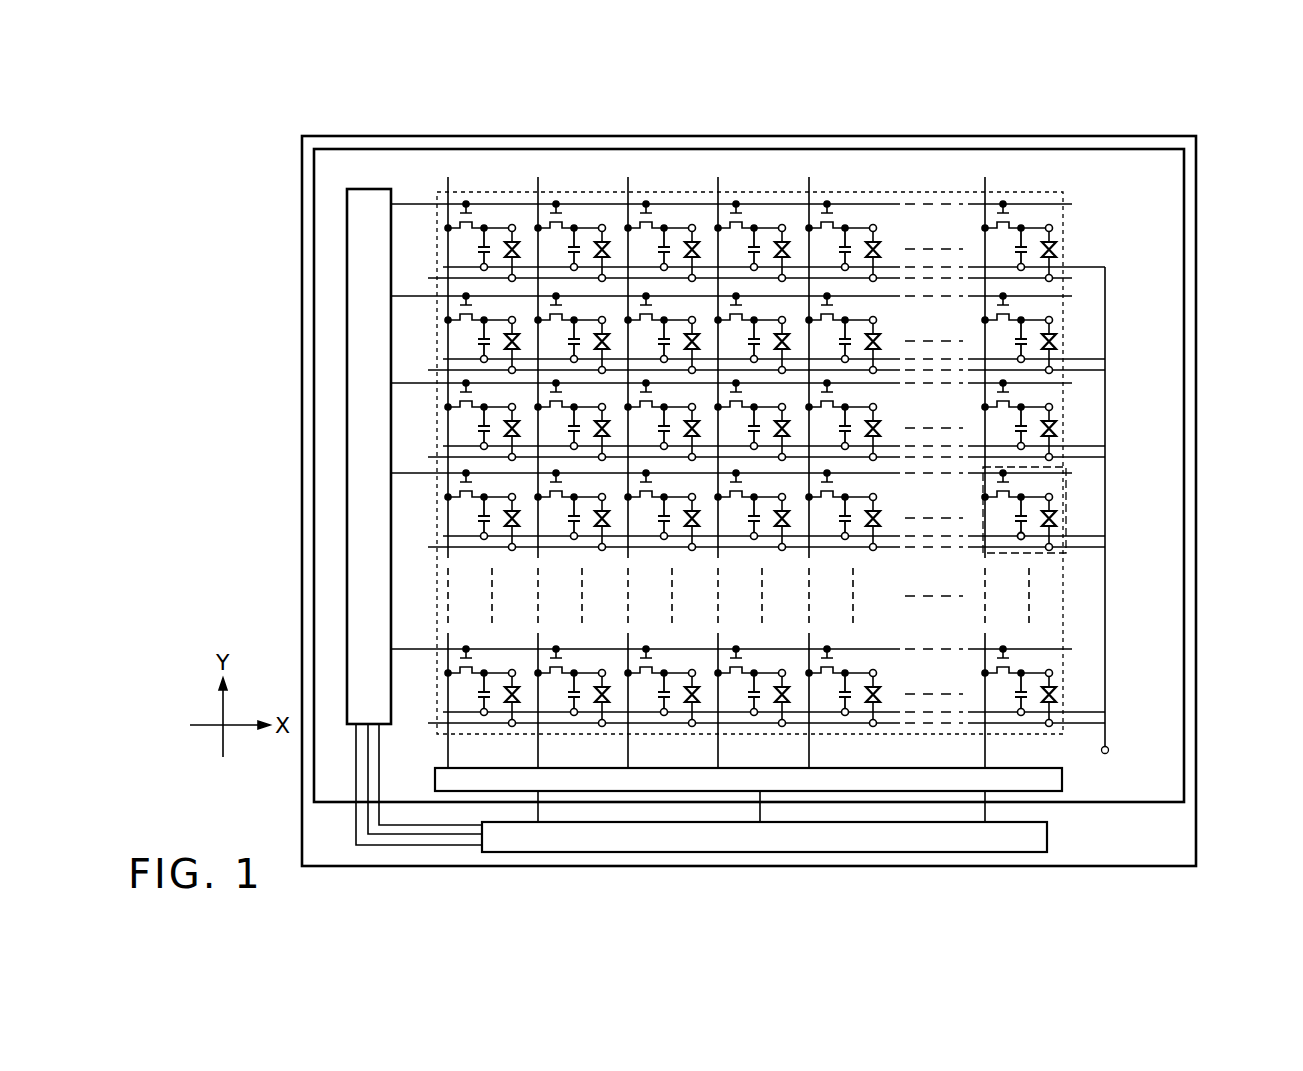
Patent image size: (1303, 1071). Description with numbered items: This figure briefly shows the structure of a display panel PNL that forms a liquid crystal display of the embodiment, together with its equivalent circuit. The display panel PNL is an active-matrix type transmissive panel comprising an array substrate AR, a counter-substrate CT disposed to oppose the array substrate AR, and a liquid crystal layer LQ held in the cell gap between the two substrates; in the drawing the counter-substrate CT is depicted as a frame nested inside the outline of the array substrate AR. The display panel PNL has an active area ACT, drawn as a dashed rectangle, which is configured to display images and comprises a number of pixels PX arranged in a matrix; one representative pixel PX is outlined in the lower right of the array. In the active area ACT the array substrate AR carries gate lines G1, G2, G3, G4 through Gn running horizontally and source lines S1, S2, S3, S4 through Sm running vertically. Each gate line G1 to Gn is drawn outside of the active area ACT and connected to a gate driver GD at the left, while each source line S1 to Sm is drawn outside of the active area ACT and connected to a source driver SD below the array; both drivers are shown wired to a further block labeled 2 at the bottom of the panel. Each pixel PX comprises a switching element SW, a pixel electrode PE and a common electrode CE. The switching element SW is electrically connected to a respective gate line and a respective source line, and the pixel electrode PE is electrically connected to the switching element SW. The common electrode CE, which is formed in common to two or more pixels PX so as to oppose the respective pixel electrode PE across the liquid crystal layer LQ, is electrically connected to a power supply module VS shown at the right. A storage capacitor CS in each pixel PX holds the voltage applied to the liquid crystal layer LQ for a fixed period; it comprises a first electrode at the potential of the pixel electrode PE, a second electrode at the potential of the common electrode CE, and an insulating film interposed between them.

The display panel PNL is at (1188, 94).
The counter-substrate CT is at (1187, 172).
The array substrate AR is at (1175, 832).
The active area ACT is at (1065, 312).
The gate driver GD is at (346, 580).
The source driver SD is at (1062, 780).
The driving IC chip 2 is at (1047, 835).
The power supply module VS is at (1109, 747).
The gate line G1 is at (409, 203).
The gate line G2 is at (409, 295).
The gate line G3 is at (409, 382).
The gate line G4 is at (409, 472).
The gate line Gn is at (407, 648).
The source line S1 is at (452, 753).
The source line S2 is at (542, 753).
The source line S3 is at (632, 753).
The source line S4 is at (722, 753).
The source line Sm is at (989, 755).
The pixel PX is at (1065, 553).
The switching element SW is at (976, 487).
The storage capacitor CS is at (992, 518).
The pixel electrode PE is at (1053, 495).
The liquid crystal layer LQ is at (1054, 512).
The common electrode CE is at (1052, 545).